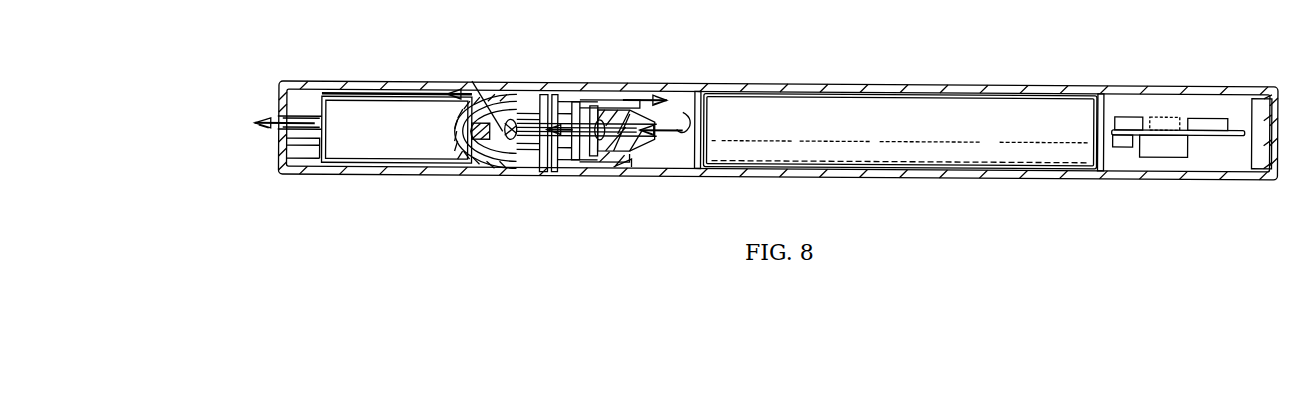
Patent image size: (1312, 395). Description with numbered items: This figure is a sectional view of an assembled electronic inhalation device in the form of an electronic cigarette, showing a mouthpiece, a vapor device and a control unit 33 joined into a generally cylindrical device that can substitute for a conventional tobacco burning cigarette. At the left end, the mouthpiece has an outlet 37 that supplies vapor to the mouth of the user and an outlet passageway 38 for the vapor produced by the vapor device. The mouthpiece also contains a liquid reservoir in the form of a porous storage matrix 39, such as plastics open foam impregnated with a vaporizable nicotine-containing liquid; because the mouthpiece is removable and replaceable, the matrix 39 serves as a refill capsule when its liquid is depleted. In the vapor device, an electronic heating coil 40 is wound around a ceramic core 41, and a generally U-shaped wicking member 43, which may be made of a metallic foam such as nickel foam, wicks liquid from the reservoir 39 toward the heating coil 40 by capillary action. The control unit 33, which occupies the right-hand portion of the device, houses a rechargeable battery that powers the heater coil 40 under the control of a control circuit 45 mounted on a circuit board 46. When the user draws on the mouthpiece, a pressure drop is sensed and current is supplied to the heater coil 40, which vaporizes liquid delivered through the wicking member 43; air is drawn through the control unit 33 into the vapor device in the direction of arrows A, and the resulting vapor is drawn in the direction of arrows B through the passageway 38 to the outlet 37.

The control unit 33 is at (916, 92).
The outlet 37 is at (278, 118).
The outlet passageway 38 is at (363, 88).
The porous storage matrix 39 is at (362, 156).
The electronic heating coil 40 is at (515, 163).
The ceramic core 41 is at (507, 88).
The U-shaped wicking member 43 is at (453, 133).
The control circuit 45 is at (1215, 132).
The circuit board 46 is at (1188, 113).
The arrows A is at (648, 95).
The arrows B is at (308, 132).